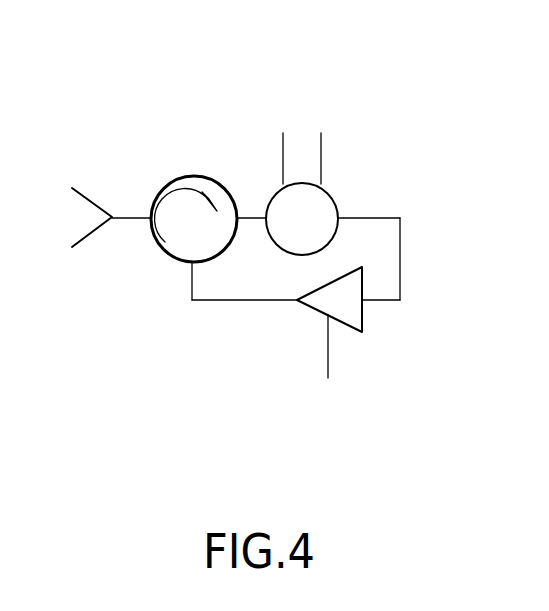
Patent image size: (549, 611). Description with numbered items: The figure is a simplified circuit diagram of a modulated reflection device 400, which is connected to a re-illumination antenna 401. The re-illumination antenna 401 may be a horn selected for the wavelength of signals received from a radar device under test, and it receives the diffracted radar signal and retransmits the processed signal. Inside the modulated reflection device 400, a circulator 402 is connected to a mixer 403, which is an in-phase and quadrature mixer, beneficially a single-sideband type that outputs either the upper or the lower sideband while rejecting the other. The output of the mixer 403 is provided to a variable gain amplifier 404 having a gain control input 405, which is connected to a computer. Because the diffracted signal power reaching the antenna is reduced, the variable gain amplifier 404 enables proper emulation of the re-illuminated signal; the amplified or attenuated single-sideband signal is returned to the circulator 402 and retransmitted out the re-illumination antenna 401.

The modulated reflection device 400 is at (338, 32).
The re-illumination antenna 401 is at (90, 190).
The circulator 402 is at (177, 177).
The mixer 403 is at (333, 197).
The variable gain amplifier 404 is at (362, 324).
The gain control input 405 is at (365, 408).